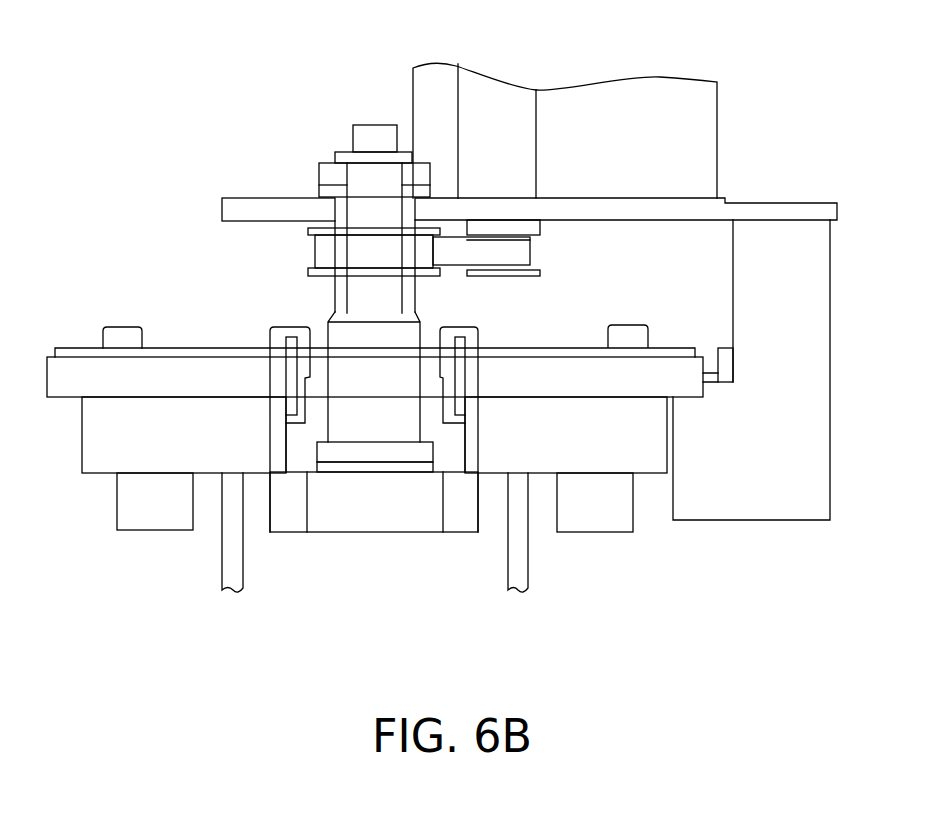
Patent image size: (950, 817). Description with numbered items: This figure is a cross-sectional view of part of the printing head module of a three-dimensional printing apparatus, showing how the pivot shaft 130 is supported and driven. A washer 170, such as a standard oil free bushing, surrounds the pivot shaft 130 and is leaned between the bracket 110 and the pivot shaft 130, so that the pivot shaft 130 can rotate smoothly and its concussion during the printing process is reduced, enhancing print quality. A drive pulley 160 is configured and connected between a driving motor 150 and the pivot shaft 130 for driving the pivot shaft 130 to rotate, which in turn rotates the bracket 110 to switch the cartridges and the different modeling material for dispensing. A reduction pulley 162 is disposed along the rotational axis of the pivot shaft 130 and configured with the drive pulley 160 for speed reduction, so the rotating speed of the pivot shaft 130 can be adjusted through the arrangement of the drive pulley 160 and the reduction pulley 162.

The bracket 110 is at (63, 377).
The pivot shaft 130 is at (365, 138).
The driving motor 150 is at (640, 100).
The drive pulley 160 is at (532, 251).
The reduction pulley 162 is at (315, 250).
The washer 170 is at (327, 192).